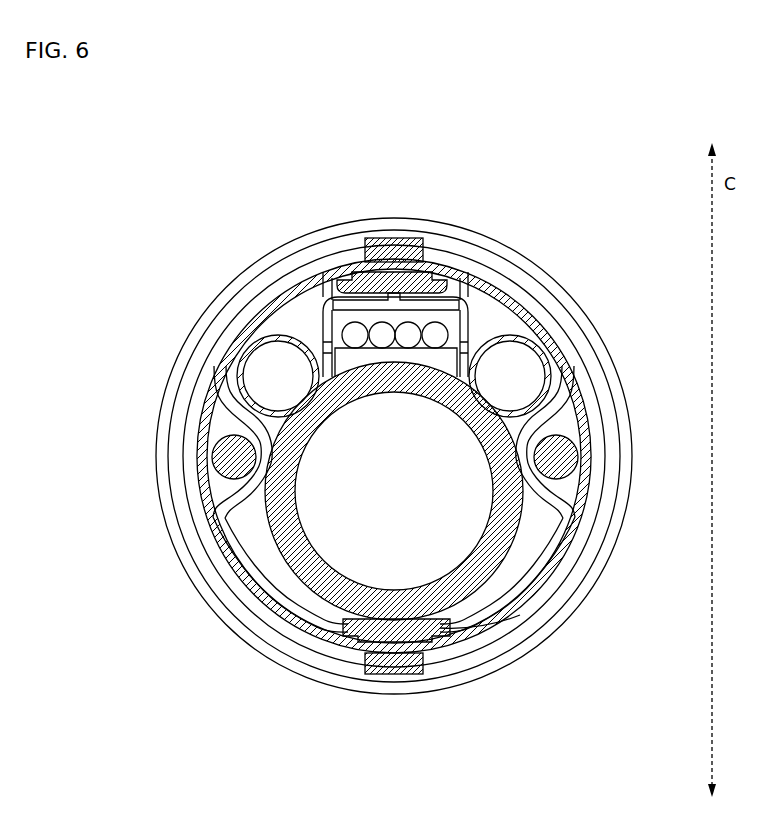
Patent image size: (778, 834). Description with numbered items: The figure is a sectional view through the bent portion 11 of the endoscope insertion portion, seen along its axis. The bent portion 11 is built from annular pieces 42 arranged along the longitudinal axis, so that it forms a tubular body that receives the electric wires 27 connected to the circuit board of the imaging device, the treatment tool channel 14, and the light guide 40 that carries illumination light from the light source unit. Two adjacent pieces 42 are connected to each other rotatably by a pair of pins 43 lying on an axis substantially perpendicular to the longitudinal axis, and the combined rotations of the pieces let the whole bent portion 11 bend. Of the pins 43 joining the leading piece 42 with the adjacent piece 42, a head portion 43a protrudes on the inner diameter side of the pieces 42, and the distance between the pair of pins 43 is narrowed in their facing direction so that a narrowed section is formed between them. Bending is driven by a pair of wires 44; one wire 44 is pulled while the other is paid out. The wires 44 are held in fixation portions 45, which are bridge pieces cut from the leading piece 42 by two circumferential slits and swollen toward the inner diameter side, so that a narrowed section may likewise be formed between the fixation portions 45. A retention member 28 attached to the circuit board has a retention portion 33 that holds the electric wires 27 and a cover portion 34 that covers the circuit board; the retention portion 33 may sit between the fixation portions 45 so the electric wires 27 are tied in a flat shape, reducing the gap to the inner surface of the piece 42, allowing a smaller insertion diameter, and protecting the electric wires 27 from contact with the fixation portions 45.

The bent portion 11 is at (218, 222).
The treatment tool channel 14 is at (327, 547).
The electric wires 27 is at (350, 333).
The retention member 28 is at (520, 175).
The retention portion 33 is at (464, 300).
The cover portion 34 is at (455, 297).
The light guide 40 is at (265, 358).
The annular pieces 42 is at (350, 650).
The pins 43 is at (395, 238).
The head portion 43a is at (480, 628).
The wires 44 is at (228, 458).
The fixation portions 45 is at (245, 553).